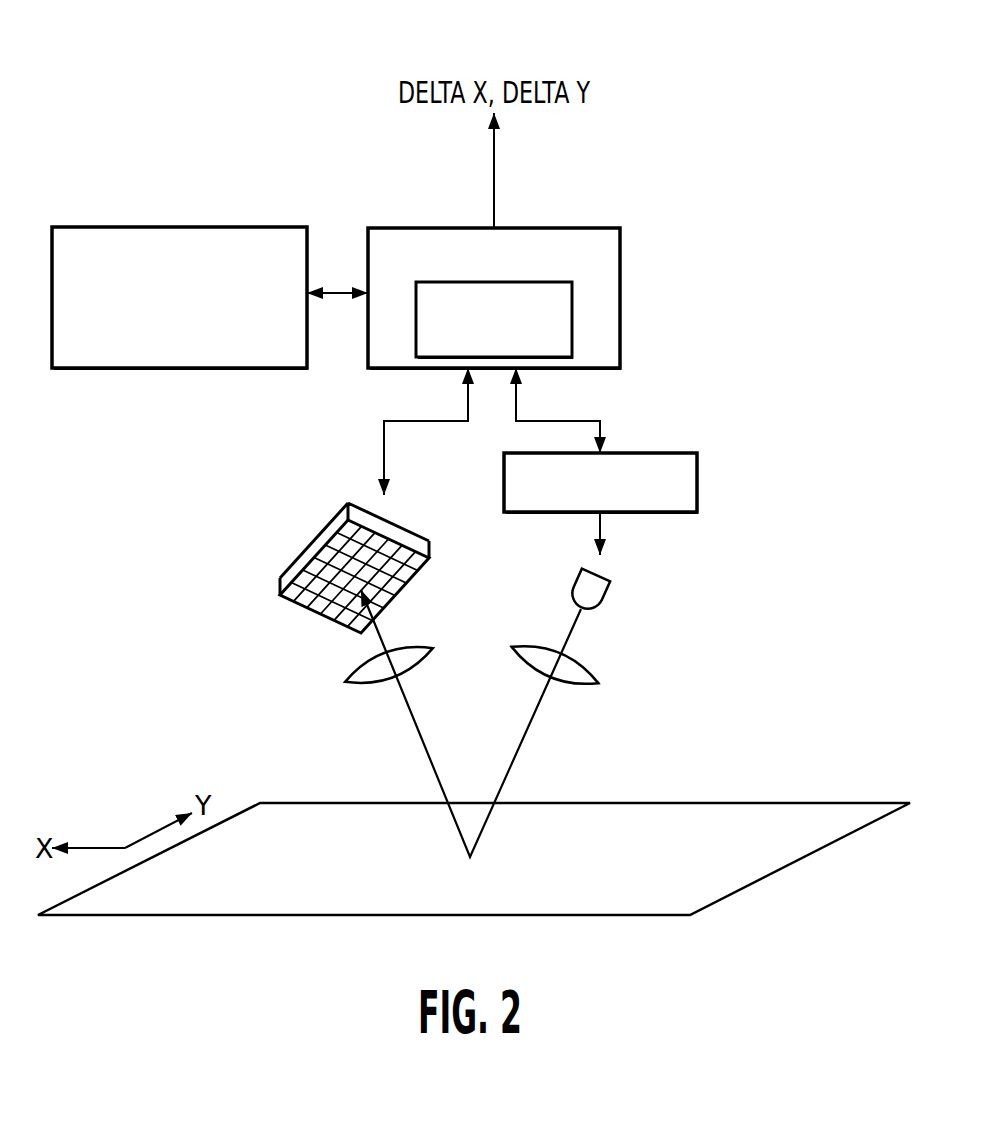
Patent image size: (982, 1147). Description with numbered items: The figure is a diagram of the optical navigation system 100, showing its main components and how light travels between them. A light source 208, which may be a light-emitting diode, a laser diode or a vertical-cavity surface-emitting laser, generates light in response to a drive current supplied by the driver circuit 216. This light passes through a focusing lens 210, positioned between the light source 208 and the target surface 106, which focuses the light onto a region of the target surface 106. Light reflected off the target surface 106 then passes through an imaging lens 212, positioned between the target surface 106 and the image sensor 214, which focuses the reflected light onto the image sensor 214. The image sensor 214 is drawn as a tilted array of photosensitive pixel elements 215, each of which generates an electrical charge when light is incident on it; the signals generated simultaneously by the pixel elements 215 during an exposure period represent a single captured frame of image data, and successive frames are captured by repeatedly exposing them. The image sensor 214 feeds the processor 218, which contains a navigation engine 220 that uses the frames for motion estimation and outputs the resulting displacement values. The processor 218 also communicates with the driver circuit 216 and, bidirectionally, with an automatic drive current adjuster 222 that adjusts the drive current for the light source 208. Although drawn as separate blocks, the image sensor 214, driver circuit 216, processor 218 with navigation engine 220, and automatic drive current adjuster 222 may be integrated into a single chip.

The optical navigation system 100 is at (752, 86).
The target surface 106 is at (813, 815).
The light source 208 is at (614, 591).
The focusing lens 210 is at (598, 683).
The imaging lens 212 is at (345, 683).
The image sensor 214 is at (315, 534).
The photosensitive pixel element 215 is at (290, 594).
The driver circuit 216 is at (697, 472).
The processor 218 is at (620, 240).
The navigation engine 220 is at (572, 300).
The automatic drive current adjuster 222 is at (171, 227).